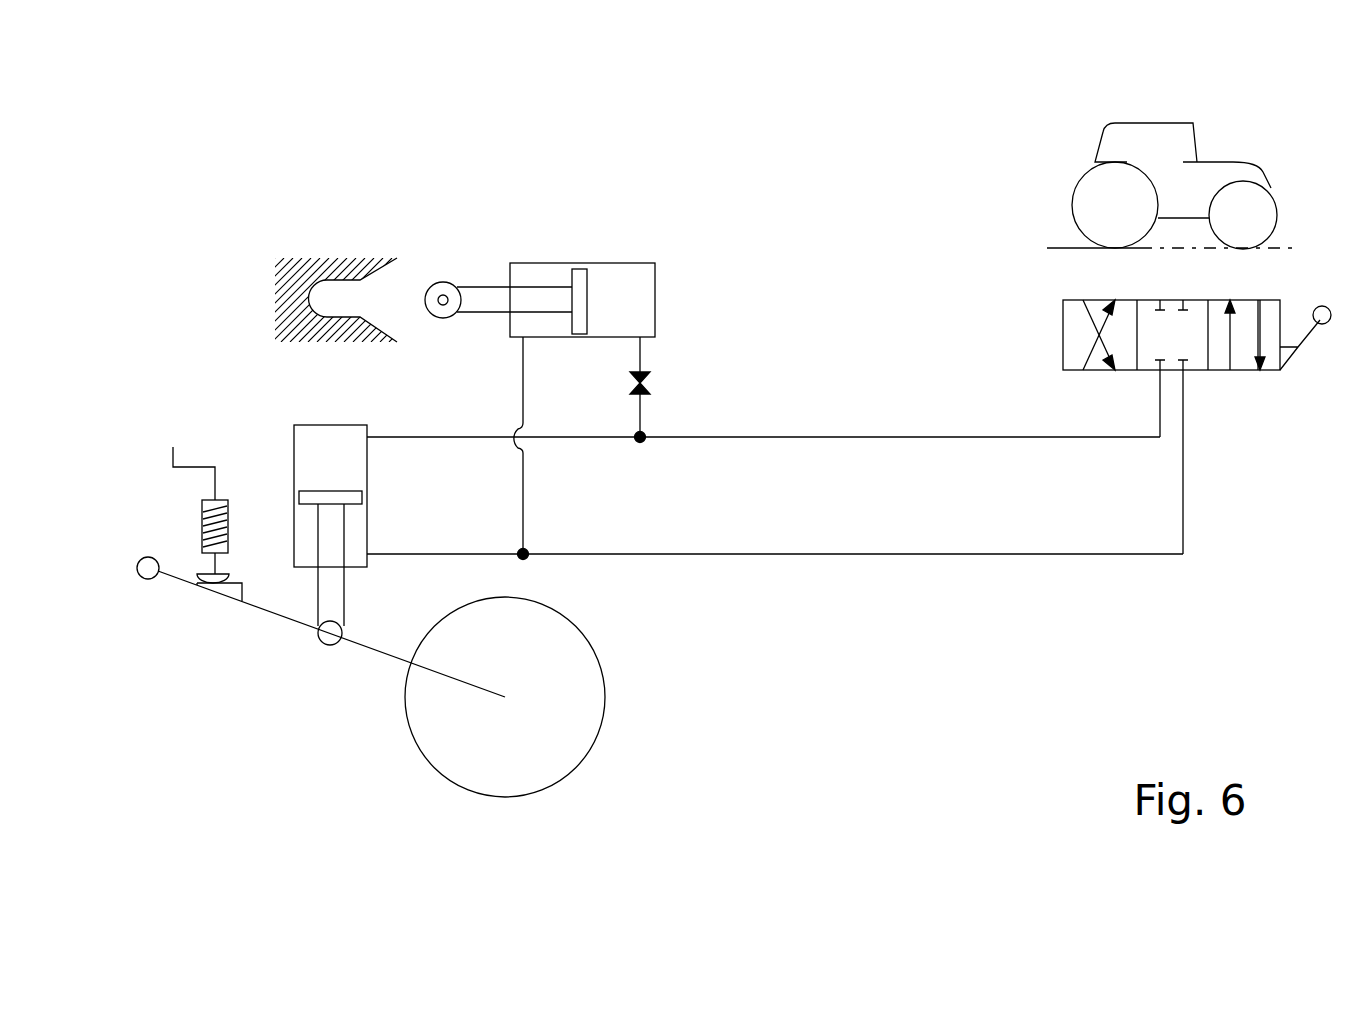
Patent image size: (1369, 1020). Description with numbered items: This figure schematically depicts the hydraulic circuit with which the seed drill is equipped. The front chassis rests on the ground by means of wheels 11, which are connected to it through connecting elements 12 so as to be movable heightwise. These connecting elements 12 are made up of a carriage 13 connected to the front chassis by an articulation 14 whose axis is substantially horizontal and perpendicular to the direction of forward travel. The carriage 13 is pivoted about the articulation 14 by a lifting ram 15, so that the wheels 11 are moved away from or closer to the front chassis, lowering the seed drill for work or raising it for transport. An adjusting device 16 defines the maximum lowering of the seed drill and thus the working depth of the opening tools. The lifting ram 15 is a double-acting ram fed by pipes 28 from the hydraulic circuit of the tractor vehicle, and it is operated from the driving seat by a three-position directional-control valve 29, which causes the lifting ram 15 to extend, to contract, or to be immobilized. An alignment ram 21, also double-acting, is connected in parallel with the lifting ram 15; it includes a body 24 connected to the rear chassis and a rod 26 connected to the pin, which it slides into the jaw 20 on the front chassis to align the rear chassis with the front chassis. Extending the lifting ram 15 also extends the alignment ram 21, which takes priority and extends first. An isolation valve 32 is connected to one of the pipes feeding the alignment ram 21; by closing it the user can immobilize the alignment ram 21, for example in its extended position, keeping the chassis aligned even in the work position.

The wheels 11 is at (597, 640).
The connecting elements 12 is at (280, 712).
The carriage 13 is at (383, 653).
The articulation 14 is at (146, 608).
The lifting ram 15 is at (320, 425).
The adjusting device 16 is at (200, 425).
The jaw 20 is at (343, 257).
The alignment ram 21 is at (597, 239).
The body 24 is at (622, 263).
The rod 26 is at (493, 287).
The pipes 28 is at (1012, 440).
The directional-control valve 29 is at (1266, 446).
The isolation valve 32 is at (650, 371).